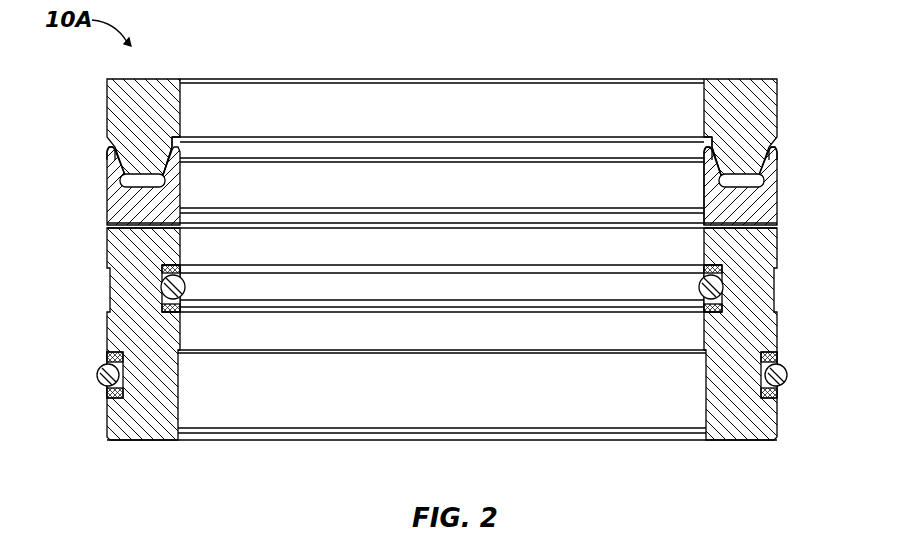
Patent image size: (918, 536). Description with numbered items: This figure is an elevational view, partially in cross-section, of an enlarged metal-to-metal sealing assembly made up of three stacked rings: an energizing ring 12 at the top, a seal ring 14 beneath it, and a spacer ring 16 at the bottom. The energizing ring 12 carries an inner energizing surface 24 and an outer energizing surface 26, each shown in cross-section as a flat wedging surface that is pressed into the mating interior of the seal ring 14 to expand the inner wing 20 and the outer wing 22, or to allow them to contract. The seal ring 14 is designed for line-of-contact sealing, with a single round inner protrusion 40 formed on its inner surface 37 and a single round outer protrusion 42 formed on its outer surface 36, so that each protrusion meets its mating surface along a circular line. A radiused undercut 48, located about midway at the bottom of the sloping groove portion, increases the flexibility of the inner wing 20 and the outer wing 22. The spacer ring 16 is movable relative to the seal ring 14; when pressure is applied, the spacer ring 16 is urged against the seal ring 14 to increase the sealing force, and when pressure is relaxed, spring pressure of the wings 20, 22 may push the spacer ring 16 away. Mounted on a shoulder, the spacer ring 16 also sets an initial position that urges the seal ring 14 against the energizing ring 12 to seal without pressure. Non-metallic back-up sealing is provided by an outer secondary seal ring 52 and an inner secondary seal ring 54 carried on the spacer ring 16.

The energizing ring 12 is at (107, 106).
The seal ring 14 is at (107, 193).
The spacer ring 16 is at (107, 328).
The inner wing 20 is at (713, 148).
The outer wing 22 is at (778, 160).
The inner energizing surface 24 is at (723, 173).
The outer energizing surface 26 is at (708, 188).
The outer surface 36 is at (777, 182).
The inner surface 37 is at (706, 165).
The inner protrusion 40 is at (178, 150).
The outer protrusion 42 is at (107, 152).
The undercut 48 is at (125, 182).
The outer secondary seal ring 52 is at (722, 288).
The inner secondary seal ring 54 is at (783, 372).